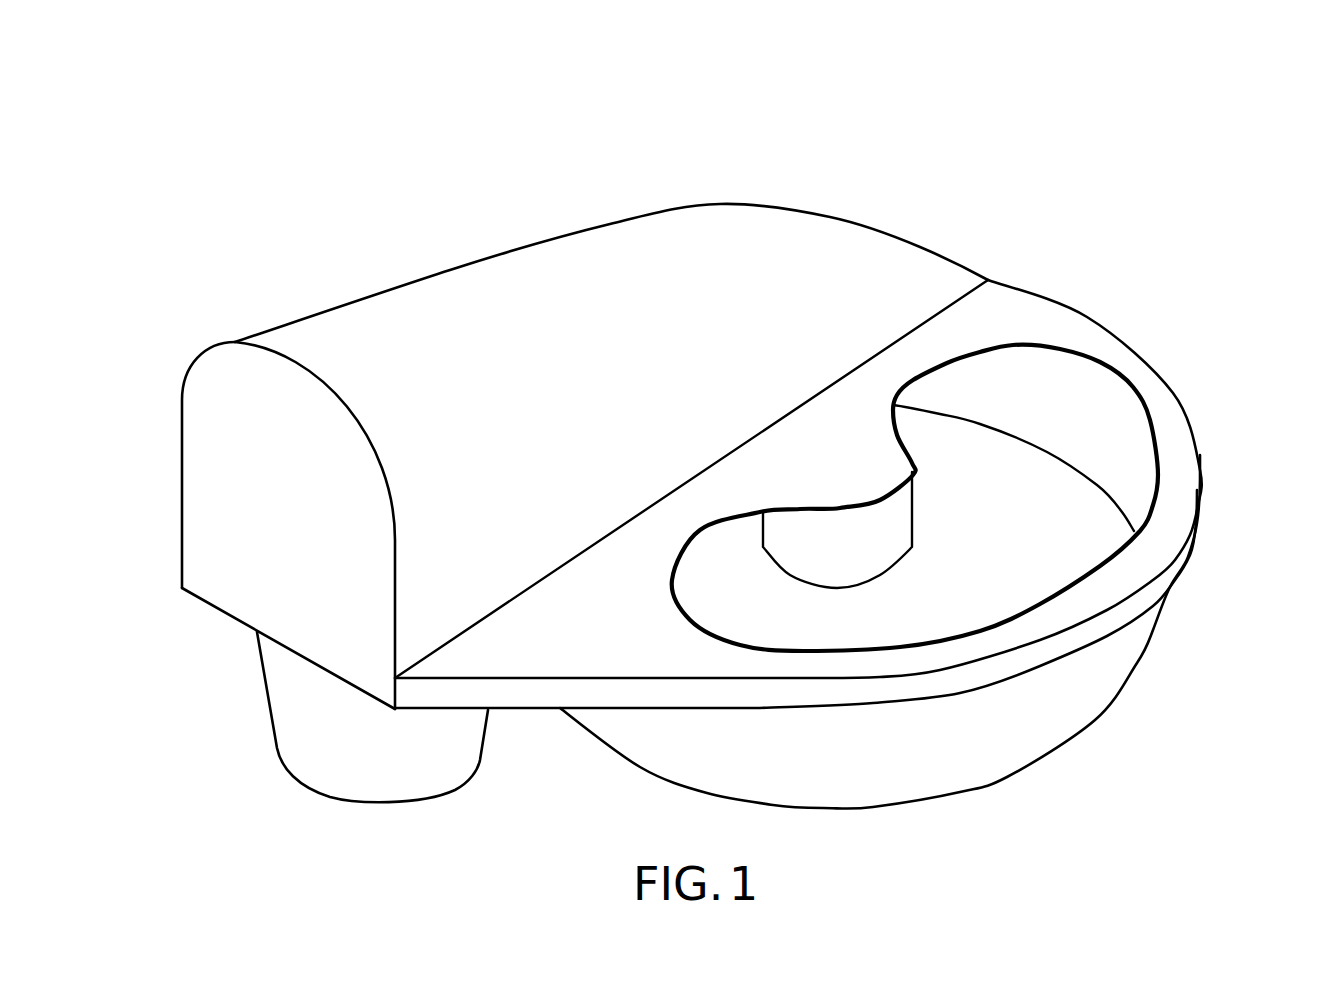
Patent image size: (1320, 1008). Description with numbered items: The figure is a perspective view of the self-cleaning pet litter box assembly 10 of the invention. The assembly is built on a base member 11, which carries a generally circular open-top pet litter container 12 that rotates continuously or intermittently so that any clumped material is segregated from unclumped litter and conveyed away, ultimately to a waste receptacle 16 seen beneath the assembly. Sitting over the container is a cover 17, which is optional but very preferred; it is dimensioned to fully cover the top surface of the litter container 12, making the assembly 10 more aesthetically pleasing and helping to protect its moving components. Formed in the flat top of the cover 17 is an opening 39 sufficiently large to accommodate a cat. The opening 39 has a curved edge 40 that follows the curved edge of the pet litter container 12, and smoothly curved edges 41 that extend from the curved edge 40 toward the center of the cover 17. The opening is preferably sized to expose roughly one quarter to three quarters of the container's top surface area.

The self-cleaning pet litter box assembly 10 is at (1207, 193).
The base member 11 is at (888, 797).
The open-top pet litter container 12 is at (1093, 431).
The waste receptacle 16 is at (317, 785).
The cover 17 is at (763, 212).
The opening 39 is at (1147, 408).
The curved edge 40 is at (1164, 462).
The smoothly curved edges 41 is at (1053, 348).